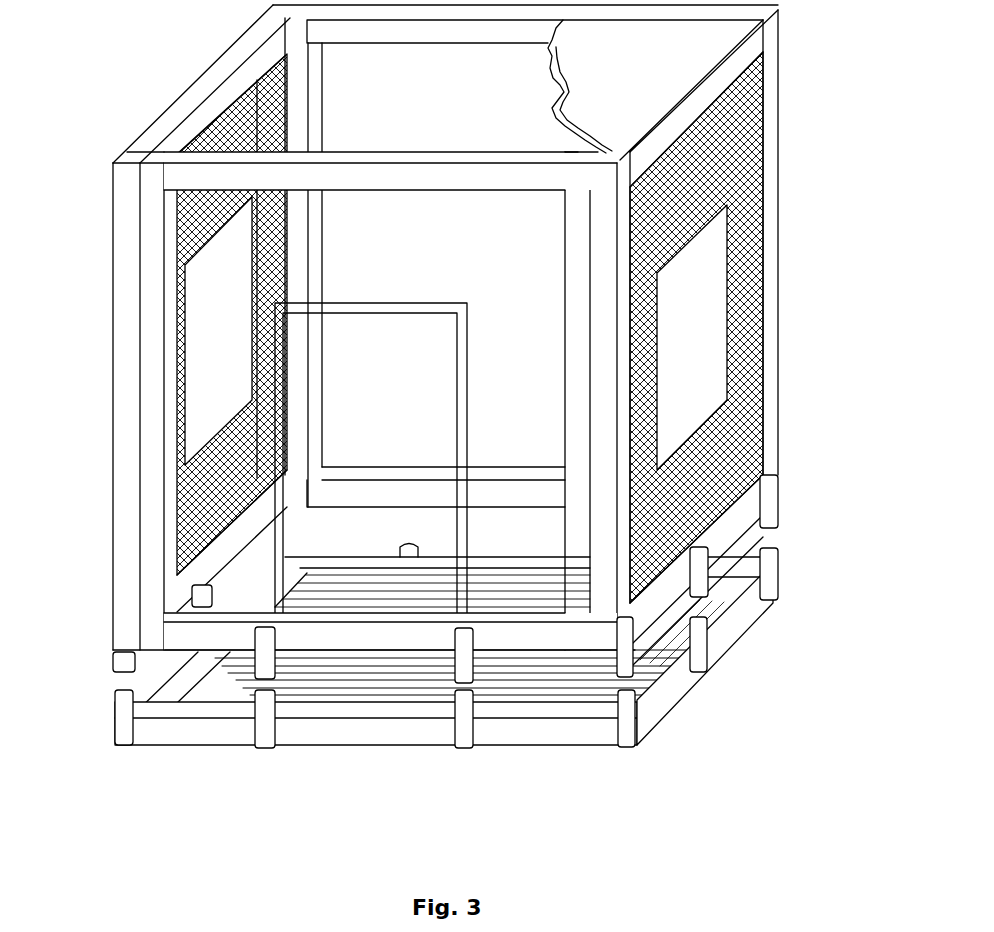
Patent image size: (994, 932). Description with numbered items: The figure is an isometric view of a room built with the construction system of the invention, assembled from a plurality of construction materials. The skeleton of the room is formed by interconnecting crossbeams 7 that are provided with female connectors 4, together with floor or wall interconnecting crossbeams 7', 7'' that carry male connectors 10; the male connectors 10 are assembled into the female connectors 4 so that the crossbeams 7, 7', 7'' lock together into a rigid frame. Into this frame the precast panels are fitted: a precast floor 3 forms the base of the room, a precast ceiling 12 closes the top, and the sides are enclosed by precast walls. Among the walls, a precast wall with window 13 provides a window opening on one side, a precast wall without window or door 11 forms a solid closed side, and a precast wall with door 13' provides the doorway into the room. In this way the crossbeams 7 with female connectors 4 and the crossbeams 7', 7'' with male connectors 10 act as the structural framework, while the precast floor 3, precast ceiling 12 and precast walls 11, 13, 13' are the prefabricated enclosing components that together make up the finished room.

The precast floor 3 is at (583, 680).
The female connector 4 is at (768, 583).
The interconnecting crossbeam 7 is at (444, 654).
The floor or wall interconnecting crossbeam 7' is at (459, 330).
The floor or wall interconnecting crossbeam 7'' is at (802, 552).
The male connector 10 is at (770, 498).
The precast wall without window or door 11 is at (255, 125).
The precast ceiling 12 is at (578, 93).
The precast wall with window 13 is at (381, 333).
The precast wall with door 13' is at (394, 458).